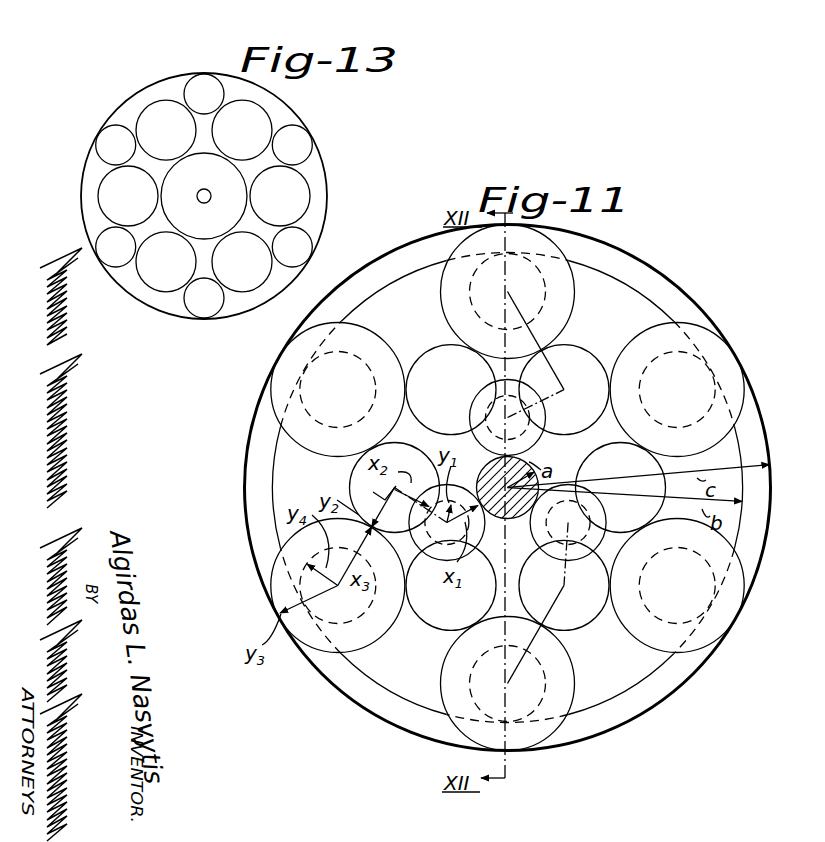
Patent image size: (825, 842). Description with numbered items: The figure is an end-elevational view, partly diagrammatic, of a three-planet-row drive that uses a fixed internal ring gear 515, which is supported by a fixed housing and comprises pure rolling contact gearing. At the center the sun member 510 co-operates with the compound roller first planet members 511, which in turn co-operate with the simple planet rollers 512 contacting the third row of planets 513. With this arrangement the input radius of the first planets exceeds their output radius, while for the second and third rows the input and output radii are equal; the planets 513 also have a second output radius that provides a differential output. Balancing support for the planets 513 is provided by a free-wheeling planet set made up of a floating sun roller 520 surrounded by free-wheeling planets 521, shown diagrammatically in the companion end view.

In FIG. 13, the sun member 510 is at (212, 181).
In FIG. 11, the sun member 510 is at (510, 505).
In FIG. 11, the compound roller first planet members 511 is at (569, 486).
In FIG. 11, the simple planet rollers 512 is at (595, 359).
In FIG. 13, the third row of planets 513 is at (200, 87).
In FIG. 11, the third row of planets 513 is at (364, 334).
In FIG. 11, the ring gear 515 is at (679, 686).
In FIG. 13, the floating sun roller 520 is at (178, 224).
In FIG. 13, the free-wheeling planets 521 is at (294, 198).